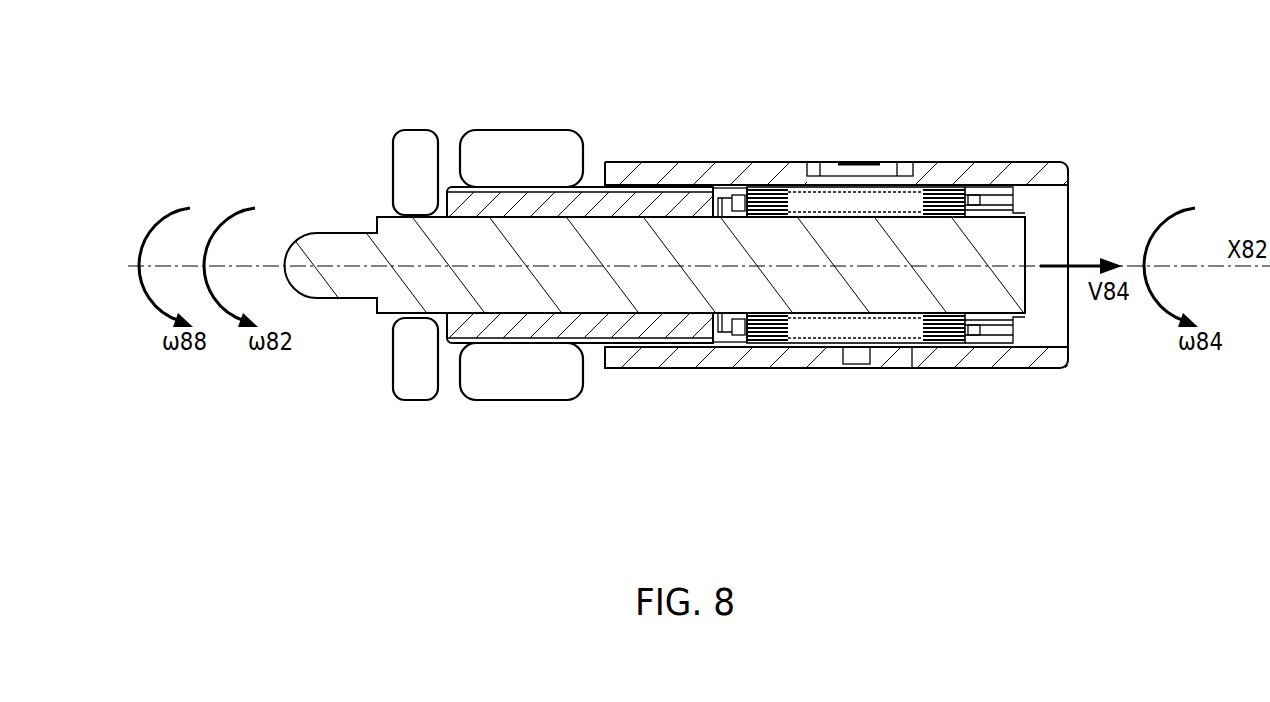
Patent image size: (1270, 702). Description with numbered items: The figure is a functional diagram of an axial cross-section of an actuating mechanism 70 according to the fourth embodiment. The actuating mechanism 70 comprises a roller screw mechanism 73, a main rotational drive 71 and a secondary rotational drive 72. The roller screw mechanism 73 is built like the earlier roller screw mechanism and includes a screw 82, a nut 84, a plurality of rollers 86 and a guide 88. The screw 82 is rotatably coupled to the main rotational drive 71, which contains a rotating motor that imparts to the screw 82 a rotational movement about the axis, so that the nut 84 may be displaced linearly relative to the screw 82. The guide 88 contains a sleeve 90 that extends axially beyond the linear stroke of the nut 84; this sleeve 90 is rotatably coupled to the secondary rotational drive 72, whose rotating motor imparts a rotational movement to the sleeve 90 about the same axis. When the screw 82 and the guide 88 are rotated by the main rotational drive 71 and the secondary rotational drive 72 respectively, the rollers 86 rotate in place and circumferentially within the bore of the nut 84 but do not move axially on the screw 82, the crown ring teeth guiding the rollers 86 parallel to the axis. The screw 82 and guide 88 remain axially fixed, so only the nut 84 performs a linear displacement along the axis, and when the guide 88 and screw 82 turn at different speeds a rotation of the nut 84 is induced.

The actuating mechanism 70 is at (430, 101).
The main rotational drive 71 is at (418, 388).
The secondary rotational drive 72 is at (512, 150).
The roller screw mechanism 73 is at (1088, 201).
The screw 82 is at (341, 286).
The nut 84 is at (805, 361).
The rollers 86 is at (896, 334).
The guide 88 is at (703, 346).
The sleeve 90 is at (547, 328).